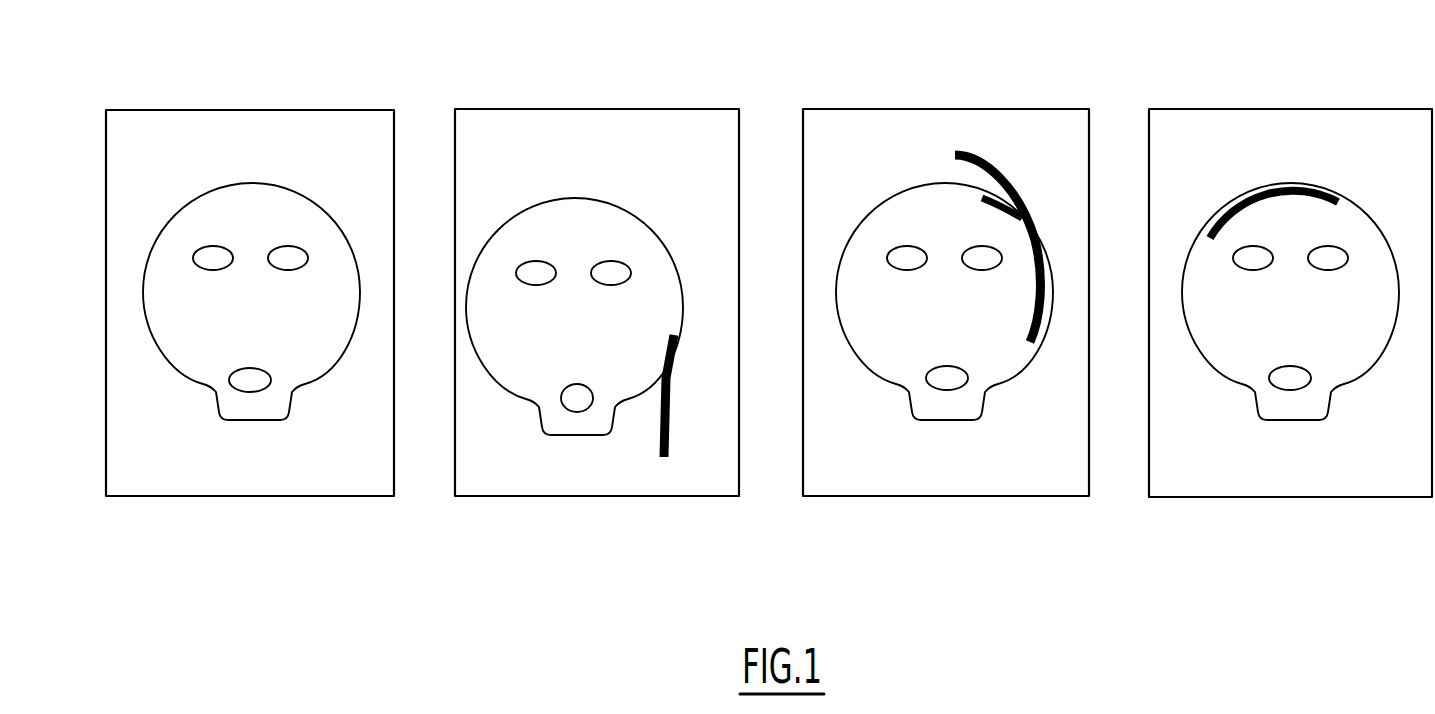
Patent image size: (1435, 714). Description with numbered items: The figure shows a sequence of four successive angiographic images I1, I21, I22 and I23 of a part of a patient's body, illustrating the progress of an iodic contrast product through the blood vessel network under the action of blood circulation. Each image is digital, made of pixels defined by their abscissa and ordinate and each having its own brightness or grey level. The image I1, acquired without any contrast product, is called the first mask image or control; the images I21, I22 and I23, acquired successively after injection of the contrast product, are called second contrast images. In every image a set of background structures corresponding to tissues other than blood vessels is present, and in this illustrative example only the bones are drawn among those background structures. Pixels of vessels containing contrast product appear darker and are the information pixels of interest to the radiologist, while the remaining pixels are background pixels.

The first mask image I1 is at (250, 300).
The second contrast image I21 is at (597, 308).
The second contrast image I22 is at (946, 308).
The second contrast image I23 is at (1290, 308).